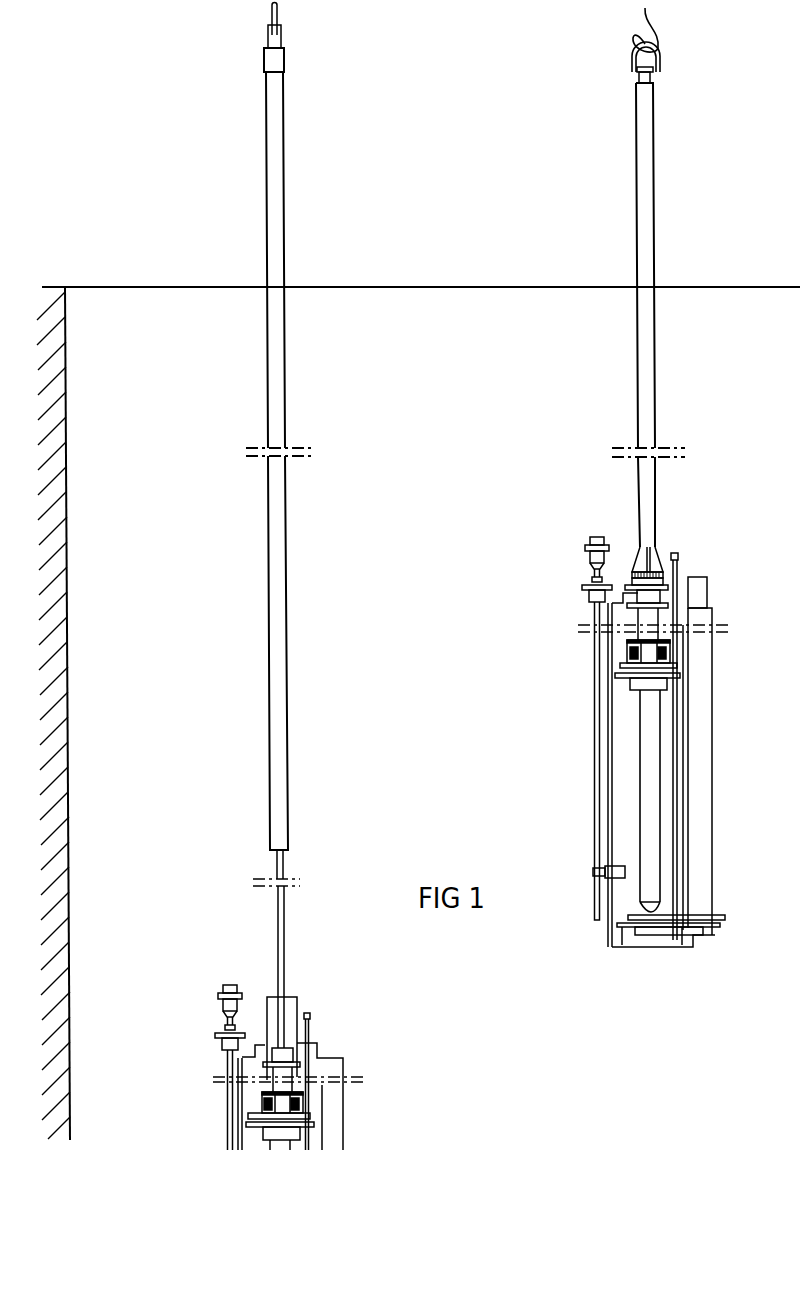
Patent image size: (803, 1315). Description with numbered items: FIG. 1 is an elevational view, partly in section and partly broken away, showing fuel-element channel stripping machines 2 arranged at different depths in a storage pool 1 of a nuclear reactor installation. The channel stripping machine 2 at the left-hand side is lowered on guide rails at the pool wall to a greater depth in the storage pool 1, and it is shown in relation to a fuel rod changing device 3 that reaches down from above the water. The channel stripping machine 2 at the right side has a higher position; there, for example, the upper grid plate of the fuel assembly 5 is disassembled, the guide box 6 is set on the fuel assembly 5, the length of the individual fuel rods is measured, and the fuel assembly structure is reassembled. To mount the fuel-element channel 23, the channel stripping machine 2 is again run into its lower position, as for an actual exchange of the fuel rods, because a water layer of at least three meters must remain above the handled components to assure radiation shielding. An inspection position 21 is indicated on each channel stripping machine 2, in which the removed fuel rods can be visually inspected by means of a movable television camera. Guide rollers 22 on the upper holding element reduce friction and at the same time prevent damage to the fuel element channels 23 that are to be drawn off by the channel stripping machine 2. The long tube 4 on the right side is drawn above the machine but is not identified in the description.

The storage pool 1 is at (104, 323).
The channel stripping machine 2 is at (293, 1043).
The fuel rod changing device 3 is at (274, 578).
The tube 4 is at (644, 366).
The fuel assembly 5 is at (650, 796).
The guide box 6 is at (275, 1087).
The inspection position 21 is at (221, 1003).
The guide rollers 22 is at (258, 1103).
The fuel assembly channel 23 is at (335, 1117).